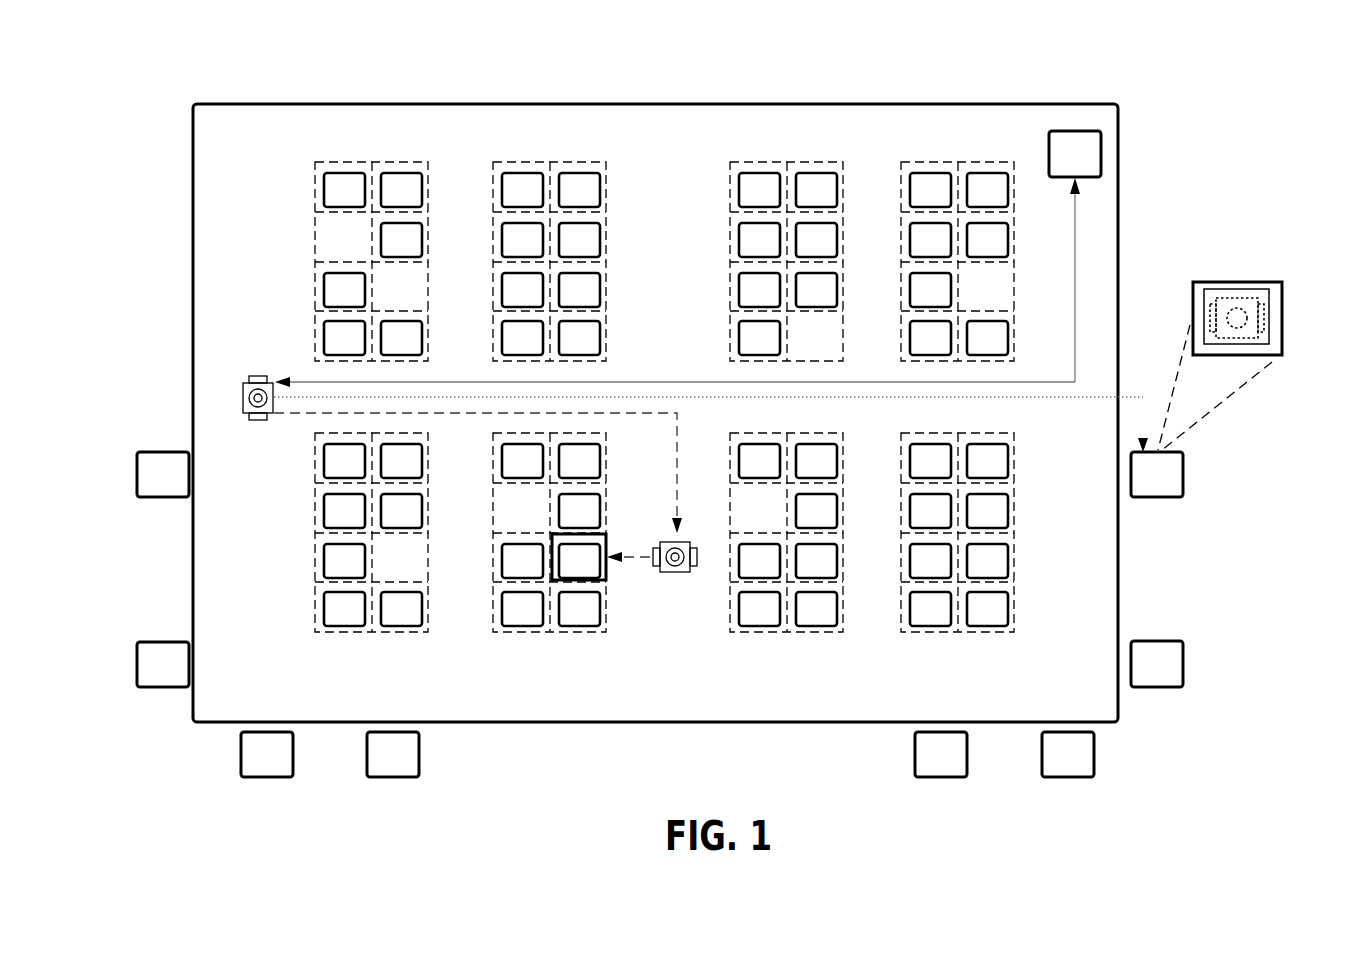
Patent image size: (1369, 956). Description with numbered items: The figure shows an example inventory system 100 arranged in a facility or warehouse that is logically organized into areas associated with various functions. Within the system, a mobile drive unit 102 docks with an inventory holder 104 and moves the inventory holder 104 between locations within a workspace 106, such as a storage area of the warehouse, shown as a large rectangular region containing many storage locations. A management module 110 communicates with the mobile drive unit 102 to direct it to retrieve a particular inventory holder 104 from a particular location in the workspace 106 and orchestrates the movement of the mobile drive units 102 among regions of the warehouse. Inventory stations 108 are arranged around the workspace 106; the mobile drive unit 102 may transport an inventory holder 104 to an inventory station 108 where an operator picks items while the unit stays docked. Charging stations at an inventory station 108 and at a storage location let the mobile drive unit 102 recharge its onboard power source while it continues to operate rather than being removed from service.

The inventory system 100 is at (176, 92).
The mobile drive unit 102 is at (243, 381).
The inventory holder 104 is at (578, 576).
The workspace 106 is at (275, 156).
The inventory station 108 is at (1157, 497).
The management module 110 is at (1075, 131).